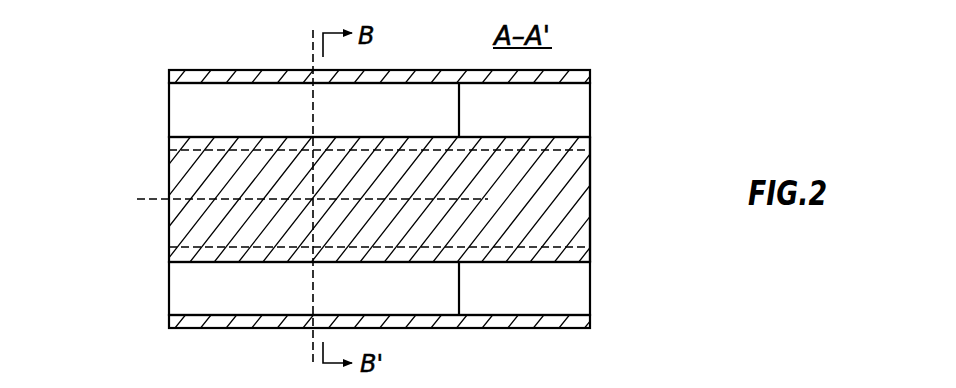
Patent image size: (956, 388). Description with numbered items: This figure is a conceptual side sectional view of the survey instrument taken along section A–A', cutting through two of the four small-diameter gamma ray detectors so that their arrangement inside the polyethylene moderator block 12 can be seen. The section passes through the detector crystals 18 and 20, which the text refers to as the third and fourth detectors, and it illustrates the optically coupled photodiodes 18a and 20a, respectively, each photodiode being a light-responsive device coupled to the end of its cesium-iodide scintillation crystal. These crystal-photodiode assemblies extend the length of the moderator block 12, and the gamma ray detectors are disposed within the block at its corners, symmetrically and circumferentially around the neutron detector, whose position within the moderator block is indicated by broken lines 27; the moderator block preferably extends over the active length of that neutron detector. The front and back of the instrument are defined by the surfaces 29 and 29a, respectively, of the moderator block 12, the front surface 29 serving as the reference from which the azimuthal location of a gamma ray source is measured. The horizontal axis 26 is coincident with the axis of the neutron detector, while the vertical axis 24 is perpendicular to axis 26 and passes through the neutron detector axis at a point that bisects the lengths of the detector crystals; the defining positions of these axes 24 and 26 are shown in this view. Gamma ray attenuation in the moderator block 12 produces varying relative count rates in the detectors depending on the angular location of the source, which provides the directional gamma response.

The moderator block 12 is at (567, 83).
The gamma ray detector 18 is at (188, 105).
The photodiode 18a is at (580, 100).
The gamma ray detector 20 is at (187, 293).
The photodiode 20a is at (585, 297).
The vertical axis 24 is at (313, 30).
The horizontal axis 26 is at (158, 202).
The boundary line 27 is at (590, 145).
The front surface 29 is at (168, 145).
The back surface 29a is at (603, 222).